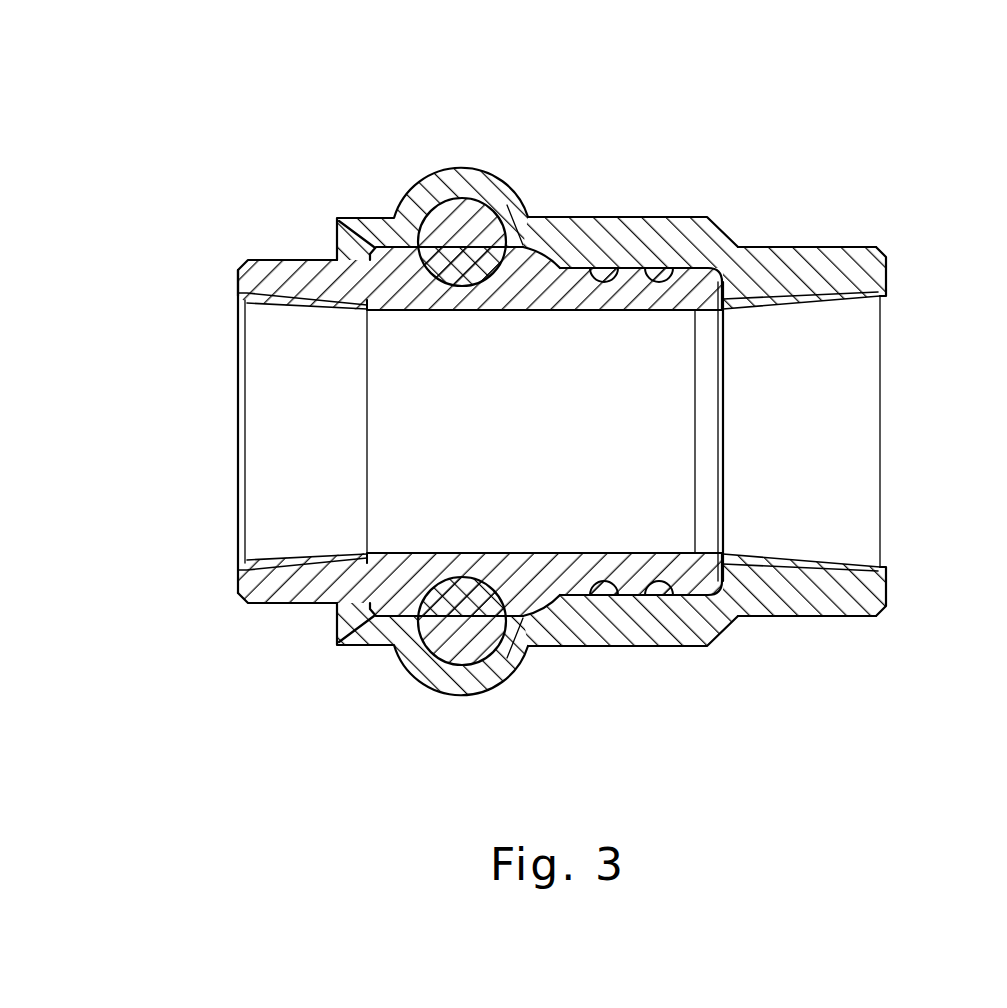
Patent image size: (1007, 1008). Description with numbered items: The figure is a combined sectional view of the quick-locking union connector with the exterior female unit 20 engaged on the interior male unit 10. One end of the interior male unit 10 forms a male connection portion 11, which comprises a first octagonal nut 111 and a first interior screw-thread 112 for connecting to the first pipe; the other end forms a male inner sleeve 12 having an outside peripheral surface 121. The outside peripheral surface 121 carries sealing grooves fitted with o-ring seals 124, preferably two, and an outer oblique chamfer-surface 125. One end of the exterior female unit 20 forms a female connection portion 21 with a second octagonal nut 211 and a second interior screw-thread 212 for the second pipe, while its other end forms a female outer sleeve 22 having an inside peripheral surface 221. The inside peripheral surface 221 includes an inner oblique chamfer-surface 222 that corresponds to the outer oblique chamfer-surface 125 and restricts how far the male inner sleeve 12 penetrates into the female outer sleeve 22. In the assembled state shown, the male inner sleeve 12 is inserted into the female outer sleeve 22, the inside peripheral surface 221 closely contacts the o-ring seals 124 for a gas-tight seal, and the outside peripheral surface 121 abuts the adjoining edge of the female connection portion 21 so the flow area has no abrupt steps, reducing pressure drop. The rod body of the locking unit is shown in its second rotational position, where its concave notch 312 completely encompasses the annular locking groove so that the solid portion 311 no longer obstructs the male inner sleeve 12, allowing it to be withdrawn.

The interior male unit 10 is at (322, 182).
The male connection portion 11 is at (250, 266).
The first octagonal nut 111 is at (292, 585).
The first interior screw-thread 112 is at (280, 303).
The male inner sleeve 12 is at (337, 219).
The outside peripheral surface 121 is at (572, 267).
The o-ring seal 124 is at (663, 267).
The outer oblique chamfer-surface 125 is at (542, 257).
The exterior female unit 20 is at (773, 247).
The female connection portion 21 is at (823, 262).
The second octagonal nut 211 is at (850, 246).
The second interior screw-thread 212 is at (857, 289).
The female outer sleeve 22 is at (678, 632).
The inside peripheral surface 221 is at (582, 597).
The inner oblique chamfer-surface 222 is at (532, 613).
The solid portion 311 is at (460, 222).
The concave notch 312 is at (420, 217).